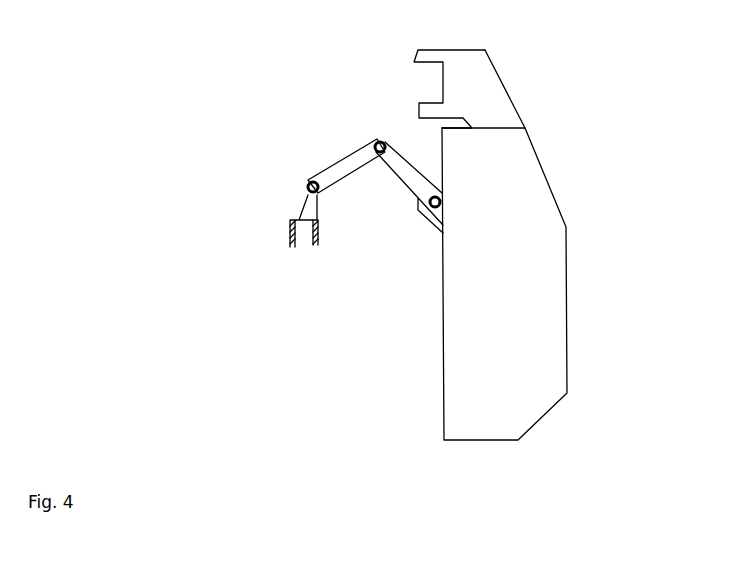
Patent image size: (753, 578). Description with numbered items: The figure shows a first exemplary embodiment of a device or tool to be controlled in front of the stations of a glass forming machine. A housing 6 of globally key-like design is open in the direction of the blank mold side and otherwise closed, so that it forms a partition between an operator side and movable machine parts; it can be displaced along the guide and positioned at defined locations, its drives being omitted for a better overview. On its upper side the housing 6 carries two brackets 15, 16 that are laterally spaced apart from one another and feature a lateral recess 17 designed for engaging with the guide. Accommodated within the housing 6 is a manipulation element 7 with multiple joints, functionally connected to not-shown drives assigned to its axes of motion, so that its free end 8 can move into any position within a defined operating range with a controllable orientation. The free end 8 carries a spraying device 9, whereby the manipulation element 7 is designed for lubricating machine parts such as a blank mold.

The housing 6 is at (527, 293).
The manipulation element 7 is at (415, 183).
The free end 8 is at (333, 158).
The spraying device 9 is at (306, 250).
The bracket 15 is at (539, 89).
The bracket 16 is at (477, 88).
The lateral recess 17 is at (423, 87).